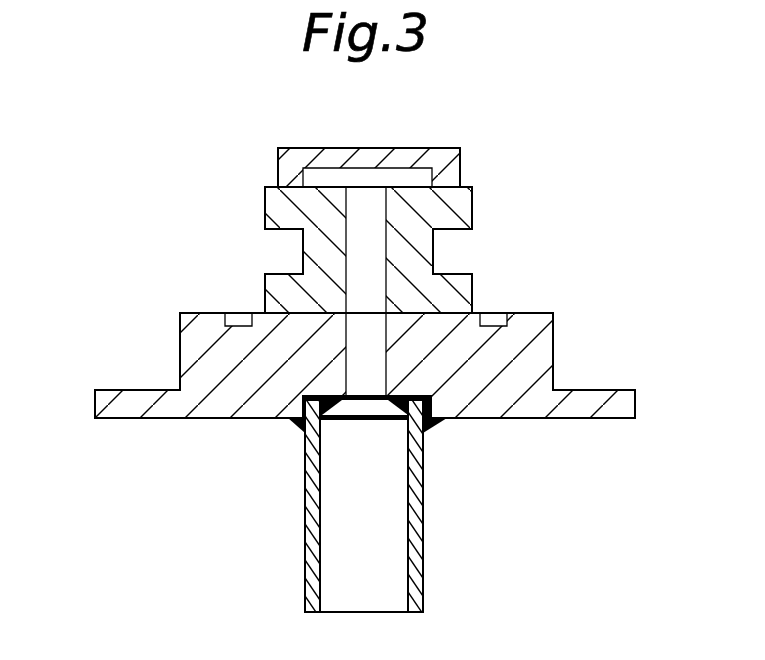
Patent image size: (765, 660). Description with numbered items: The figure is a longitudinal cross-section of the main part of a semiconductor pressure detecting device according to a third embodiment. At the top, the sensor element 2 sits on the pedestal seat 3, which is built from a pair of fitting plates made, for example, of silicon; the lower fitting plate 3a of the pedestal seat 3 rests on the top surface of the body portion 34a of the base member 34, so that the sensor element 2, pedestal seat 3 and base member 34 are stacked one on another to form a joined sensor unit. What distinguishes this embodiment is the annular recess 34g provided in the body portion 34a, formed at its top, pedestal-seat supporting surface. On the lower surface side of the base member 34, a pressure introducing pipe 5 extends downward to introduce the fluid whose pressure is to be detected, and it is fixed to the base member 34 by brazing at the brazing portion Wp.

The sensor element 2 is at (405, 149).
The pedestal seat 3 is at (478, 205).
The lower fitting plate 3a is at (264, 283).
The base member 34 is at (546, 311).
The annular recess 34g is at (503, 320).
The body portion 34a is at (181, 347).
The pressure introducing pipe 5 is at (422, 482).
The brazing portion Wp is at (300, 427).